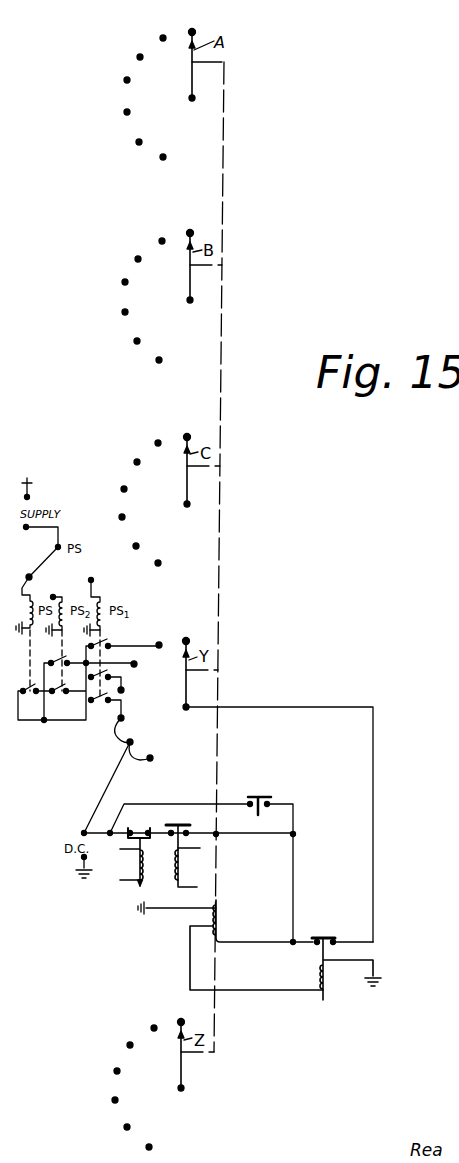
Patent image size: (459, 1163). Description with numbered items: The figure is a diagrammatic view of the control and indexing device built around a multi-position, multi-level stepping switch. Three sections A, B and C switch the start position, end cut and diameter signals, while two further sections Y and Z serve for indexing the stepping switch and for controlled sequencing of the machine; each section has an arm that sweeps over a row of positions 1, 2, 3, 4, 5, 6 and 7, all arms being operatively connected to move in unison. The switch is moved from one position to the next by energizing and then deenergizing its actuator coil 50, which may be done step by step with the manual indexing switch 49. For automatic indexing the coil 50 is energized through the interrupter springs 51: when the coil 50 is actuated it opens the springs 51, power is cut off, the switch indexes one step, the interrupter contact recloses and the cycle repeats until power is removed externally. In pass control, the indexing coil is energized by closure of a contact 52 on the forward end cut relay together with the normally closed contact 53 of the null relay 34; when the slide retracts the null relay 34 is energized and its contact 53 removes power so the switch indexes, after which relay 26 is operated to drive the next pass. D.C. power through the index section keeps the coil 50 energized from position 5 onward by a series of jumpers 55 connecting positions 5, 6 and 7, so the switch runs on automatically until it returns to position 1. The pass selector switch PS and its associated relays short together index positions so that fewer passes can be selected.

The stepping switch position 1 is at (186, 519).
The stepping switch position 2 is at (155, 527).
The stepping switch position 3 is at (128, 546).
The stepping switch position 4 is at (113, 576).
The stepping switch position 5 is at (112, 606).
The stepping switch position 6 is at (124, 642).
The stepping switch position 7 is at (150, 658).
The relay 26 is at (181, 870).
The null relay 34 is at (138, 868).
The manual indexing switch 49 is at (256, 796).
The actuator coil 50 is at (220, 916).
The interrupter springs 51 is at (333, 928).
The contact 52 is at (178, 822).
The normally closed contact 53 is at (141, 822).
The jumpers 55 is at (115, 735).